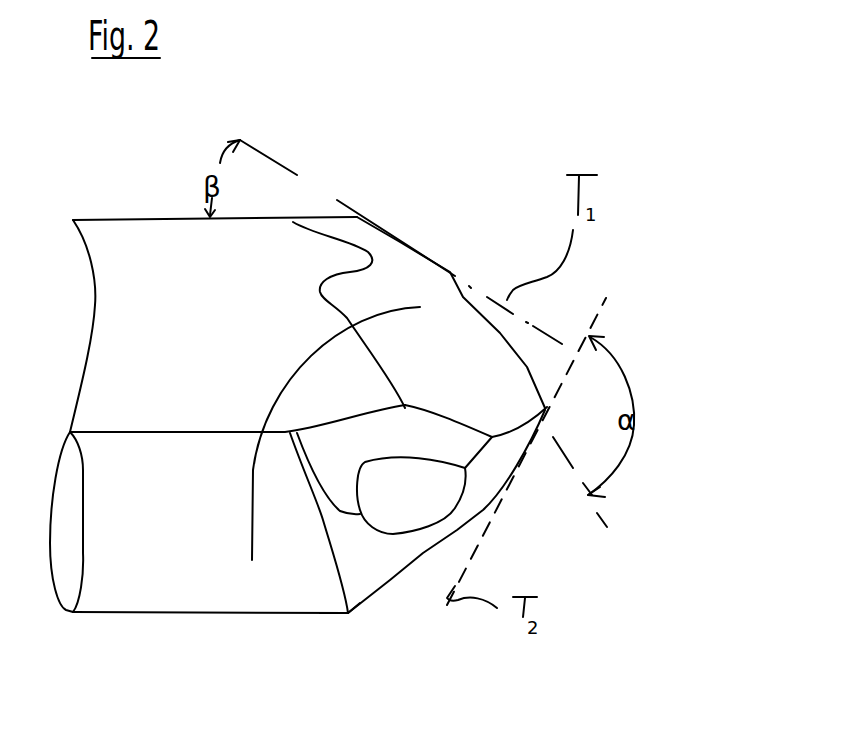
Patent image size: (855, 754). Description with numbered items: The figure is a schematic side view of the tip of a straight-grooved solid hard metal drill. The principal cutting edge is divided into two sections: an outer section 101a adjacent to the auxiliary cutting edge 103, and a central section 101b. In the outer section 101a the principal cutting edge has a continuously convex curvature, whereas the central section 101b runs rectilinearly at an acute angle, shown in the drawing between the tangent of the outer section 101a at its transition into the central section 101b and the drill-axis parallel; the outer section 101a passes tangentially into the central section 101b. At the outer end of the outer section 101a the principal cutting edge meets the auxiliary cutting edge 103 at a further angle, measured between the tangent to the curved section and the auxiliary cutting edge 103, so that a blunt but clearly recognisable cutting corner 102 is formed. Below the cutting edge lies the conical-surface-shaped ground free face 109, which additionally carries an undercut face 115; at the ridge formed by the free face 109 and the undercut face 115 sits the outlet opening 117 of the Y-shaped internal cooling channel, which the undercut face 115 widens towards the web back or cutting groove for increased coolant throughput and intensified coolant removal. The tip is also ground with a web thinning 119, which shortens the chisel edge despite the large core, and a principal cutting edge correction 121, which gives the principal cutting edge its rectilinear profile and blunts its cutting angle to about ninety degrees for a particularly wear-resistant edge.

The outer section of the principal cutting edge 101a is at (463, 295).
The central section of the principal cutting edge 101b is at (533, 382).
The cutting corner 102 is at (346, 622).
The auxiliary cutting edge 103 is at (323, 218).
The free face 109 is at (379, 563).
The undercut face 115 is at (333, 473).
The outlet opening 117 is at (410, 508).
The web thinning 119 is at (252, 560).
The principal cutting edge correction 121 is at (160, 582).